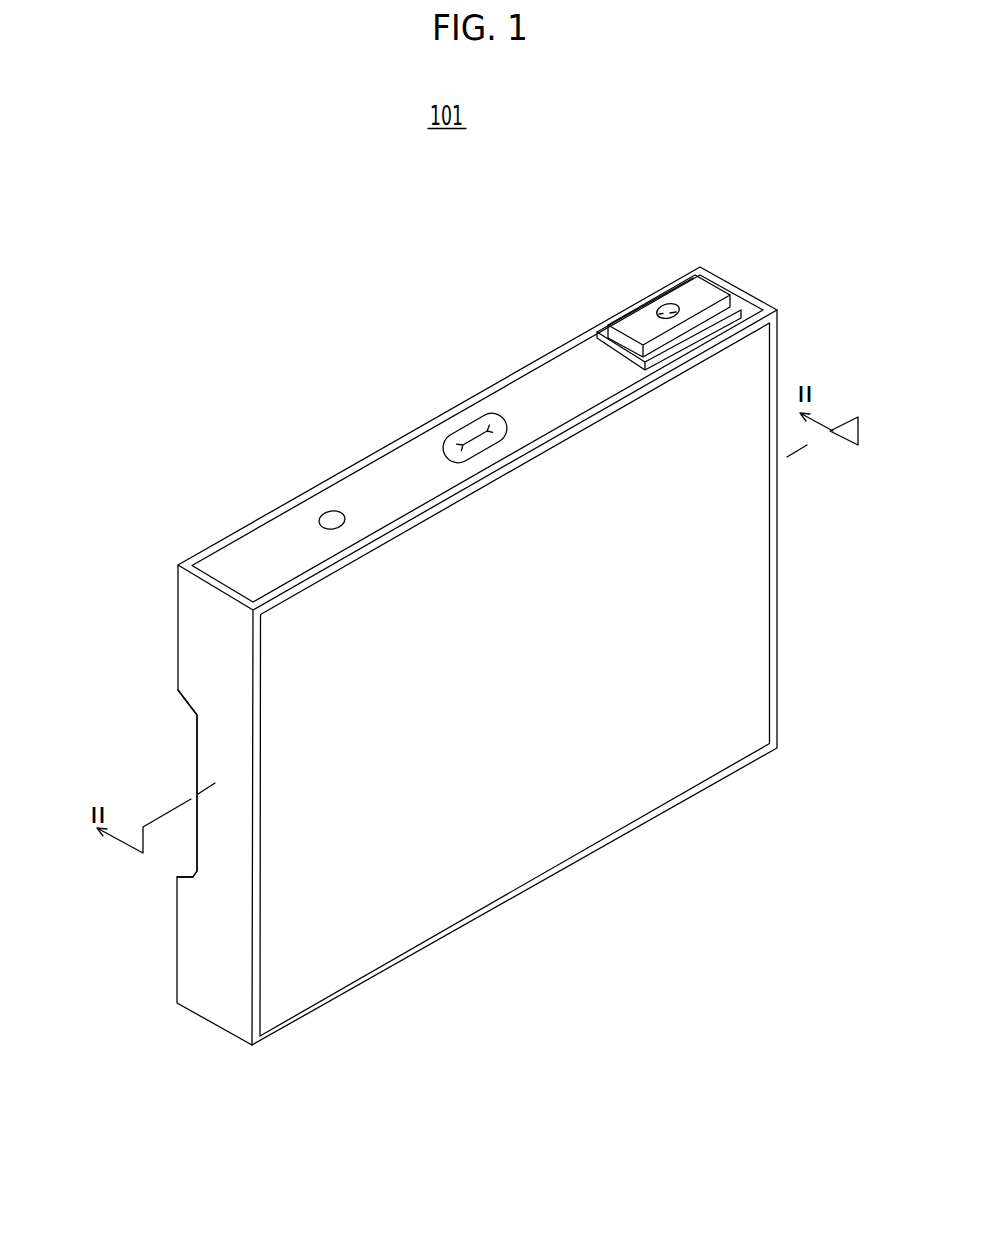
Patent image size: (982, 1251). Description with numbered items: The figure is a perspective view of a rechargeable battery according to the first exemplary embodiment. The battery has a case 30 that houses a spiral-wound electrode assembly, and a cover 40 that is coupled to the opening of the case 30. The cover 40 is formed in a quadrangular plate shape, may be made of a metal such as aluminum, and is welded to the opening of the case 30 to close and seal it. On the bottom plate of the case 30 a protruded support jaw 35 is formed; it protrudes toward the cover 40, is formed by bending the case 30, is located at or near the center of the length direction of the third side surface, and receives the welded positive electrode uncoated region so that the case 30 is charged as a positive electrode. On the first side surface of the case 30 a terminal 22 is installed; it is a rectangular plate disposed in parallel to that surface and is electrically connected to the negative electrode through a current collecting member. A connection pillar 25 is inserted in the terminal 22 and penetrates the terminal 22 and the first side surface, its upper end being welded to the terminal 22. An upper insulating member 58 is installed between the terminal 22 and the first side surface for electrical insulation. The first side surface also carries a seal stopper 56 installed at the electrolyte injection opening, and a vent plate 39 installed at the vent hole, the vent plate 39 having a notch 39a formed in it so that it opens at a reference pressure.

The case 30 is at (224, 1013).
The support jaw 35 is at (197, 745).
The cover 40 is at (580, 823).
The seal stopper 56 is at (318, 515).
The vent plate 39 is at (443, 443).
The notch 39a is at (471, 428).
The upper insulating member 58 is at (604, 333).
The terminal 22 is at (684, 288).
The connection pillar 25 is at (657, 305).